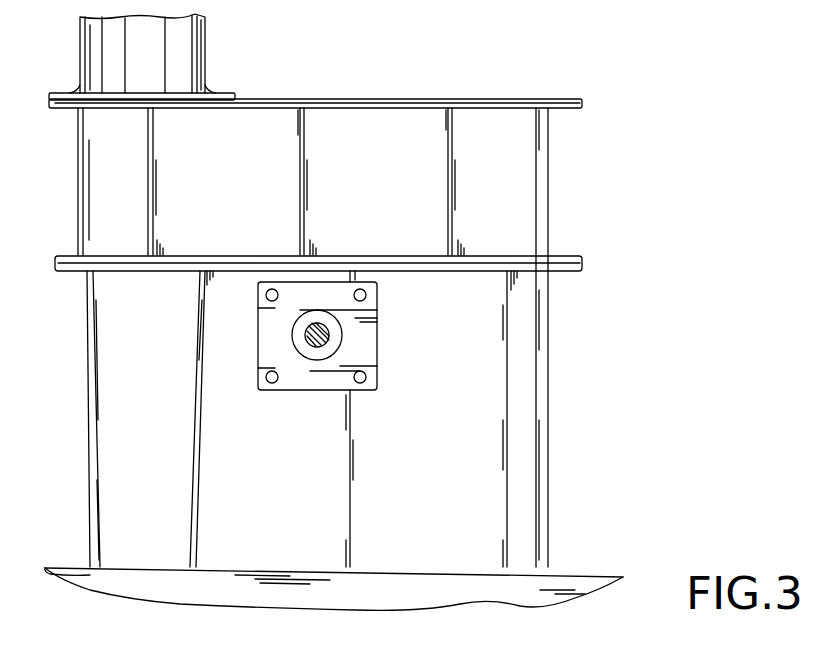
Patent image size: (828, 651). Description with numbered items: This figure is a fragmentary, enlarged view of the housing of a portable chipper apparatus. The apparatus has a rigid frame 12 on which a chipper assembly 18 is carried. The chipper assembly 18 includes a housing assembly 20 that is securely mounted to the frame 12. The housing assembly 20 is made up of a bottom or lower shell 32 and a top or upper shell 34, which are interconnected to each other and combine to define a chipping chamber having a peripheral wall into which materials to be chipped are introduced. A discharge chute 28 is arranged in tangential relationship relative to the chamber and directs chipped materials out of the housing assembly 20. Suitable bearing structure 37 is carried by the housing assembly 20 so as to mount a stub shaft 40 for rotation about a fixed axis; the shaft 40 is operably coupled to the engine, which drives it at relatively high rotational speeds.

The rigid frame 12 is at (350, 590).
The chipper assembly 18 is at (620, 443).
The housing assembly 20 is at (65, 447).
The discharge chute 28 is at (177, 40).
The lower shell 32 is at (523, 512).
The upper shell 34 is at (520, 190).
The bearing structure 37 is at (332, 380).
The stub shaft 40 is at (316, 343).